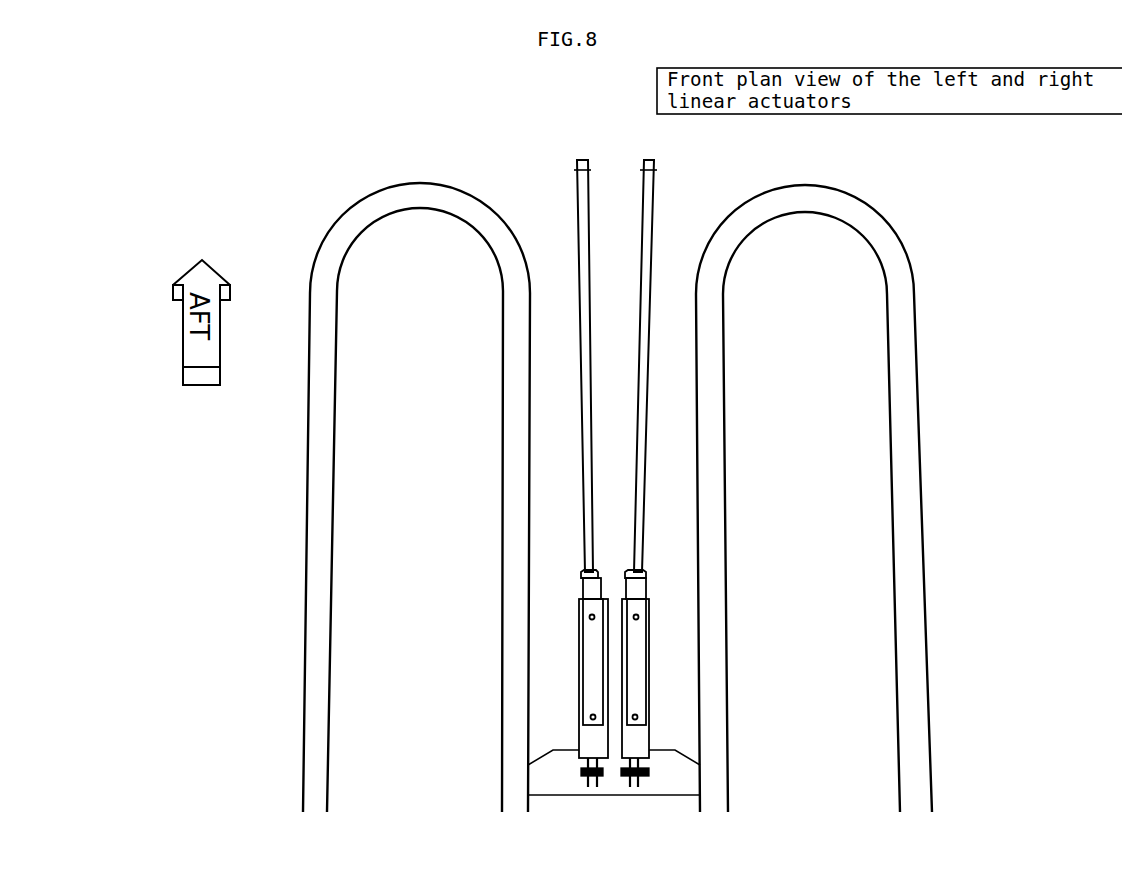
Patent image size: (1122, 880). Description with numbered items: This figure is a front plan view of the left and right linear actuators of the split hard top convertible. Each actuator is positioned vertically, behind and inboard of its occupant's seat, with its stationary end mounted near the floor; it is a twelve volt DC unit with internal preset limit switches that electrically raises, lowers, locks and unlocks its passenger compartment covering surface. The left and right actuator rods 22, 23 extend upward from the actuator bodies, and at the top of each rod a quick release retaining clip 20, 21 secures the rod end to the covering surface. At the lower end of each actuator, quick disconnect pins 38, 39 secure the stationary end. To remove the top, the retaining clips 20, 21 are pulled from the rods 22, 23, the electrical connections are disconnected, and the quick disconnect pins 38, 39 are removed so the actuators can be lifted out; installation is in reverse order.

The quick release retaining clip 20 is at (558, 170).
The quick release retaining clip 21 is at (674, 170).
The left actuator rod 22 is at (586, 663).
The right actuator rod 23 is at (645, 663).
The quick disconnect pin 38 is at (568, 764).
The quick disconnect pin 39 is at (662, 764).